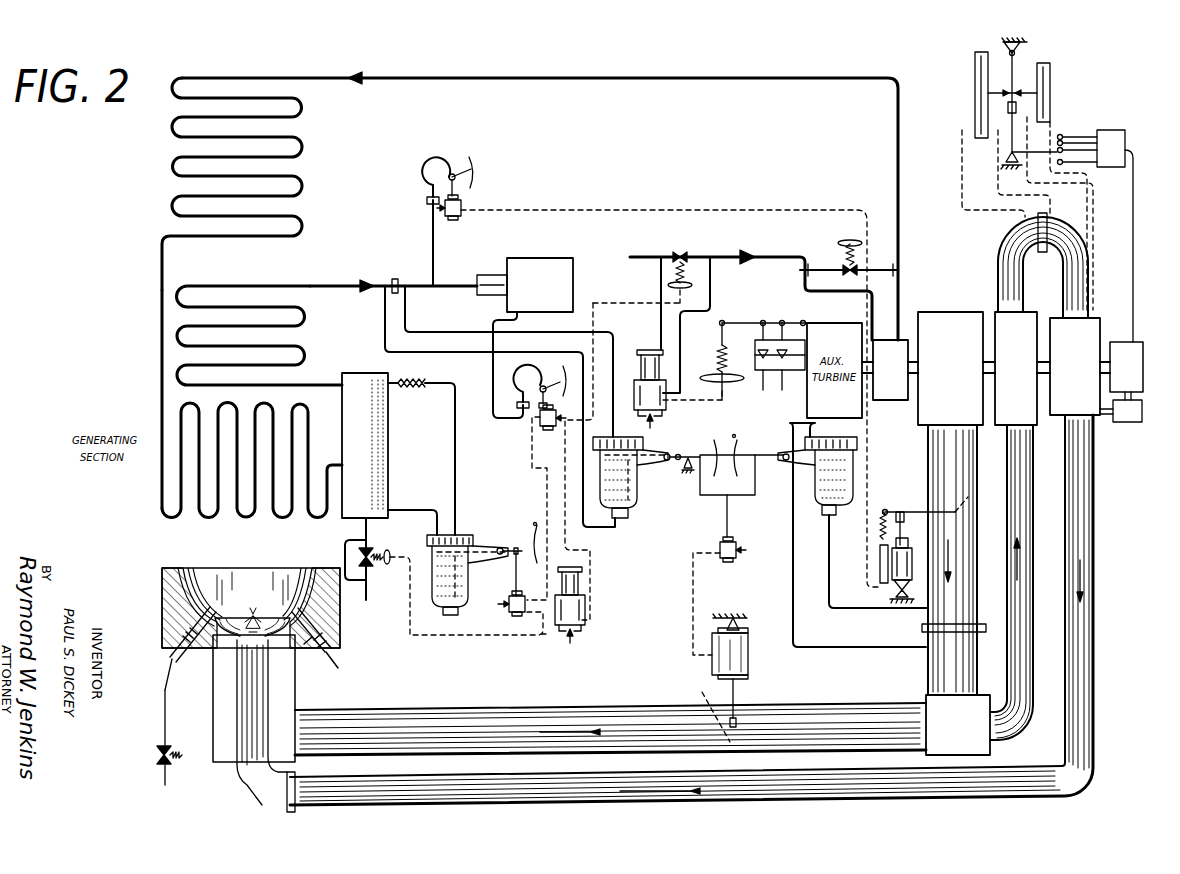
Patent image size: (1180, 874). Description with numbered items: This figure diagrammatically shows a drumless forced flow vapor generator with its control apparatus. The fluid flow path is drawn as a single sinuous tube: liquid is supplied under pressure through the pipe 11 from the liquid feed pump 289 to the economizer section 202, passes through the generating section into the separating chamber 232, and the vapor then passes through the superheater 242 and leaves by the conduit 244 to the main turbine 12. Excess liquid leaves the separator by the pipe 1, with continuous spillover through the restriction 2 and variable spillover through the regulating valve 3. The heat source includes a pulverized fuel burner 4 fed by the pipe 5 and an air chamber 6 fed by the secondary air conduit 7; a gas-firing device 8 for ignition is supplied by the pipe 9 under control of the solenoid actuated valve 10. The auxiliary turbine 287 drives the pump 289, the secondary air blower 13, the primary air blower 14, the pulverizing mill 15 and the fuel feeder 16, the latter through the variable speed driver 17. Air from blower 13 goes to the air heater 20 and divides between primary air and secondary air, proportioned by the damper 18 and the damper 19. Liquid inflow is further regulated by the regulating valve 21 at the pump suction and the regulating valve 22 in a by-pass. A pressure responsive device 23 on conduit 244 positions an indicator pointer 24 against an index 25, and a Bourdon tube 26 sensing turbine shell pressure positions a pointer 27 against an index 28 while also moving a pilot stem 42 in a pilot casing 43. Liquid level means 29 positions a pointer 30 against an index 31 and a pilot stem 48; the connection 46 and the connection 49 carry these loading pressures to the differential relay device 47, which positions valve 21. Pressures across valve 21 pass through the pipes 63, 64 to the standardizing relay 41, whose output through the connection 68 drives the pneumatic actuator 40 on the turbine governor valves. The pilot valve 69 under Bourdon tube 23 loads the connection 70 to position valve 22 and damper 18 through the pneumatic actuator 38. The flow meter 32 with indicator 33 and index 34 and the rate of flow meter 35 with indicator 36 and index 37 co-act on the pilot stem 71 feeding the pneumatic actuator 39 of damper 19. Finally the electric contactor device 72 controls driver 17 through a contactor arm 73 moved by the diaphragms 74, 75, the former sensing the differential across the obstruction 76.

The pipe 1 is at (369, 585).
The restriction 2 is at (345, 540).
The regulating valve 3 is at (378, 551).
The pulverized fuel burner 4 is at (254, 685).
The pipe 5 is at (348, 806).
The air chamber 6 is at (298, 672).
The secondary air conduit 7 is at (394, 702).
The gas-firing device 8 is at (190, 652).
The pipe 9 is at (168, 705).
The solenoid actuated valve 10 is at (172, 748).
The pipe 11 is at (545, 78).
The main turbine 12 is at (480, 252).
The secondary air blower 13 is at (938, 308).
The primary air blower 14 is at (996, 304).
The pulverizing mill 15 is at (1054, 308).
The fuel feeder 16 is at (1112, 422).
The variable speed driver 17 is at (1112, 341).
The damper 18 is at (945, 510).
The damper 19 is at (705, 694).
The air heater 20 is at (926, 688).
The regulating valve 21 is at (688, 252).
The regulating valve 22 is at (836, 275).
The pressure responsive device 23 is at (420, 153).
The indicator pointer 24 is at (458, 168).
The index 25 is at (478, 183).
The Bourdon tube 26 is at (510, 385).
The indicator pointer 27 is at (546, 378).
The index 28 is at (566, 384).
The liquid level responsive means 29 is at (494, 536).
The pointer 30 is at (516, 550).
The index 31 is at (537, 524).
The flow meter 32 is at (637, 485).
The indicator 33 is at (702, 452).
The index 34 is at (714, 436).
The rate of flow meter 35 is at (870, 464).
The indicator 36 is at (740, 448).
The index 37 is at (736, 435).
The pneumatic actuator 38 is at (912, 550).
The pneumatic actuator 39 is at (750, 644).
The pneumatic actuator 40 is at (708, 374).
The standardizing relay 41 is at (636, 362).
The pilot stem 42 is at (550, 405).
The pilot casing 43 is at (553, 432).
The connection 46 is at (530, 452).
The differential relay device 47 is at (585, 630).
The pilot stem 48 is at (500, 572).
The connection 49 is at (546, 634).
The pipe 63 is at (656, 277).
The pipe 64 is at (718, 292).
The connection 68 is at (690, 399).
The pilot valve 69 is at (462, 219).
The connection 70 is at (603, 206).
The pilot stem 71 is at (720, 532).
The electric contactor device 72 is at (1102, 130).
The contactor arm 73 is at (1040, 148).
The diaphragm 74 is at (975, 80).
The diaphragm 75 is at (1051, 82).
The obstruction 76 is at (1042, 252).
The economizer section 202 is at (182, 184).
The separating chamber 232 is at (388, 420).
The superheater 242 is at (198, 397).
The conduit 244 is at (292, 282).
The auxiliary turbine 287 is at (790, 390).
The liquid feed pump 289 is at (880, 399).